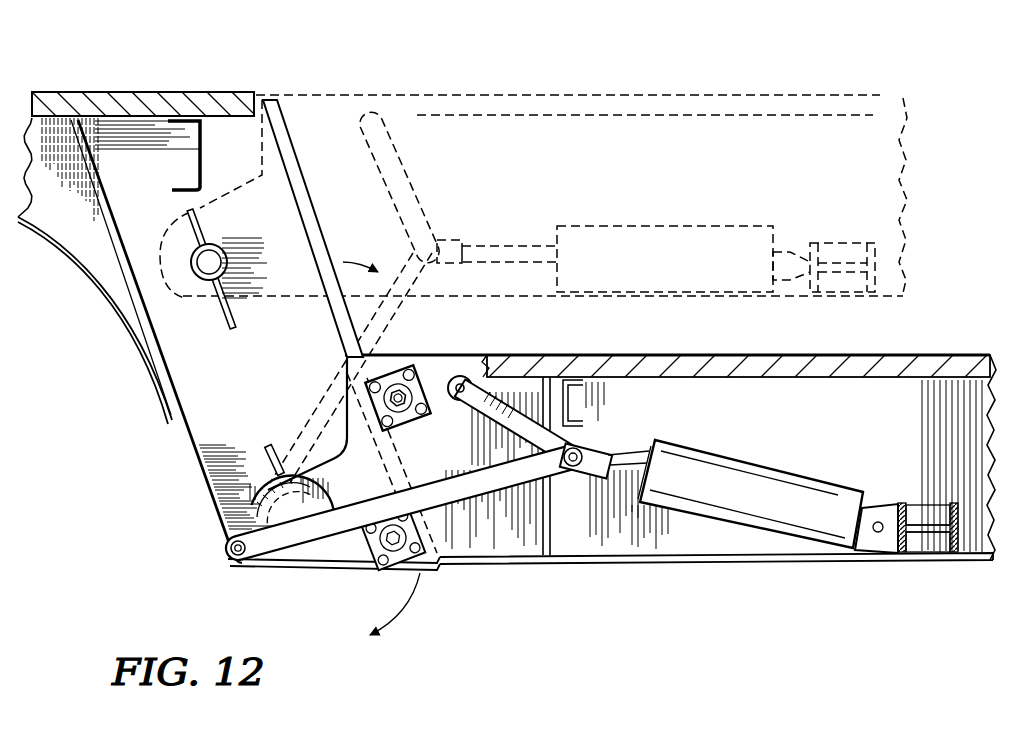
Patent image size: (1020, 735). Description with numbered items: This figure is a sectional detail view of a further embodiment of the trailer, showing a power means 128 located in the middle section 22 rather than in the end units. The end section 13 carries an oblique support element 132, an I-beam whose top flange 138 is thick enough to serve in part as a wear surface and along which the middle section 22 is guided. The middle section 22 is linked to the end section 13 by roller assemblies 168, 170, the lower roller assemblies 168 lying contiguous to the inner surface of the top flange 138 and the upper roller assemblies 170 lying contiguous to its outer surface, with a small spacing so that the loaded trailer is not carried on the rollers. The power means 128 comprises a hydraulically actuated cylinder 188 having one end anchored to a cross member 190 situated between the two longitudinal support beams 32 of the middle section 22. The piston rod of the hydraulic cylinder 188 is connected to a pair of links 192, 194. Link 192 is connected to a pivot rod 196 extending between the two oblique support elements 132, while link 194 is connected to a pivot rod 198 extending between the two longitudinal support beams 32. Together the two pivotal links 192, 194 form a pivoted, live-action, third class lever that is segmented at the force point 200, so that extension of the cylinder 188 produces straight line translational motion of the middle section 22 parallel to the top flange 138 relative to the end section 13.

The end section 13 is at (211, 91).
The middle section 22 is at (908, 176).
The longitudinal support beams 32 is at (572, 540).
The power means 128 is at (783, 507).
The oblique support elements 132 is at (184, 484).
The top flange 138 is at (313, 228).
The lower roller assemblies 168 is at (390, 560).
The upper roller assemblies 170 is at (390, 370).
The hydraulic cylinder 188 is at (810, 515).
The cross member 190 is at (925, 515).
The link 192 is at (437, 495).
The link 194 is at (477, 403).
The pivot rod 196 is at (246, 567).
The pivot rod 198 is at (463, 380).
The force point 200 is at (583, 452).